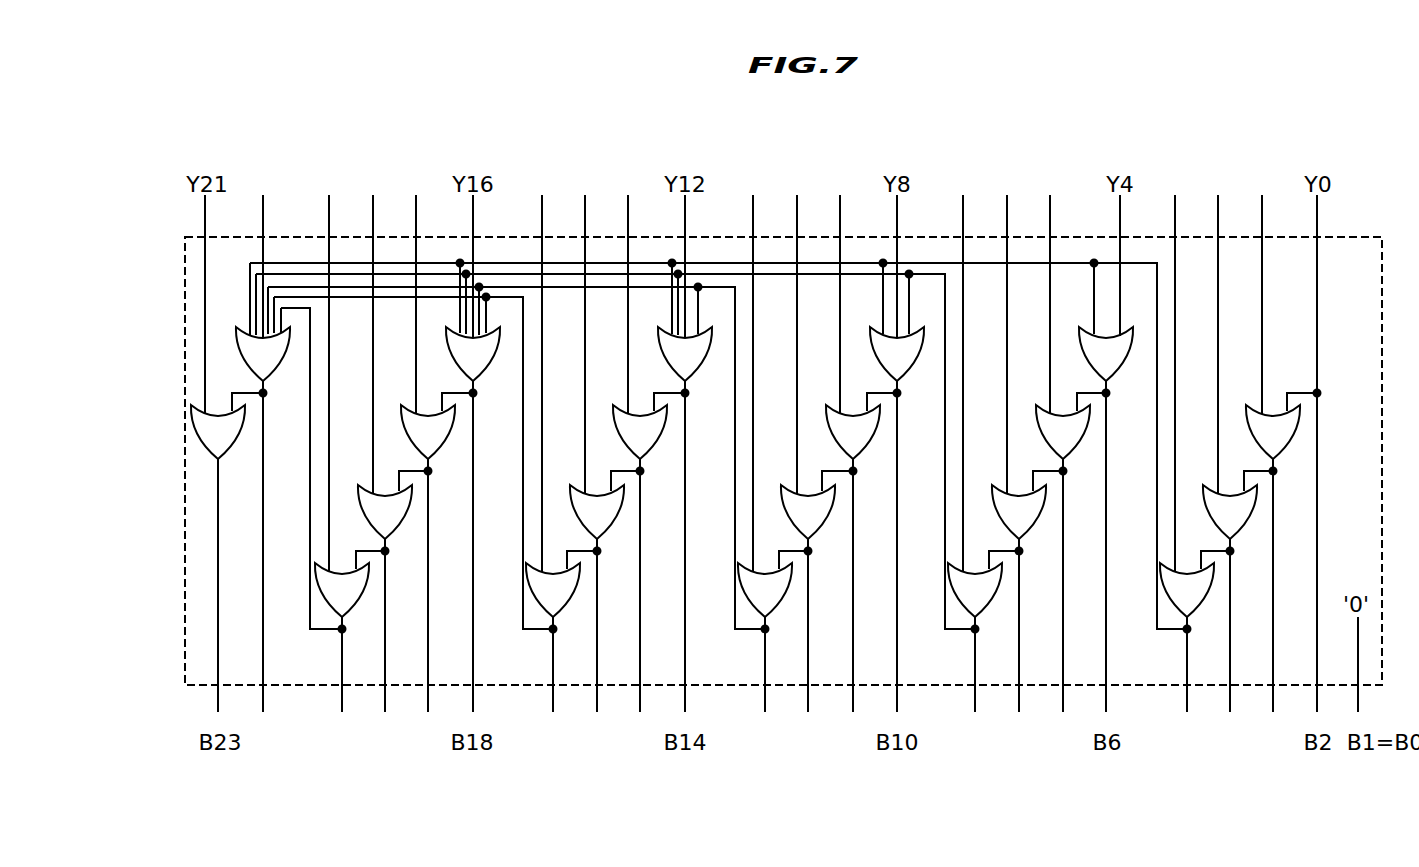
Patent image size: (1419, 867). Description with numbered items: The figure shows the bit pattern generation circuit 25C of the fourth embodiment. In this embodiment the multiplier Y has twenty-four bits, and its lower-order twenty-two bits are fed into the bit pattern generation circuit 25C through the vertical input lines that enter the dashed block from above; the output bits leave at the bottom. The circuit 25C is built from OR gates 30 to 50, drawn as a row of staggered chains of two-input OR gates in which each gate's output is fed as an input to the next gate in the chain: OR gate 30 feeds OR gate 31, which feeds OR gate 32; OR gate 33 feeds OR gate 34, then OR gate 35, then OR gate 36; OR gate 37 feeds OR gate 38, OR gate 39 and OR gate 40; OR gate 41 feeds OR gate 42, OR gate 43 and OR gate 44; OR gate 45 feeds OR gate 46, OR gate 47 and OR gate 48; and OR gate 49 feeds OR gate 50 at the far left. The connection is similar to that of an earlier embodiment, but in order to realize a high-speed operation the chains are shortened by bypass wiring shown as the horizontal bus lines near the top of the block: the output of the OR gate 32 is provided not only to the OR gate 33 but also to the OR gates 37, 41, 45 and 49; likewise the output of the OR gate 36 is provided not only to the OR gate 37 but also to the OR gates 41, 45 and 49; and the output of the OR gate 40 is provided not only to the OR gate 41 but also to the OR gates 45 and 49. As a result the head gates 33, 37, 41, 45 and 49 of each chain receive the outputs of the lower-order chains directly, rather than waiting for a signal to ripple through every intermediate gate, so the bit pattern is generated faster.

The bit pattern generation circuit 25C is at (1355, 237).
The OR gate 30 is at (1287, 441).
The OR gate 31 is at (1244, 521).
The OR gate 32 is at (1201, 599).
The OR gate 33 is at (1120, 363).
The OR gate 34 is at (1077, 441).
The OR gate 35 is at (1033, 521).
The OR gate 36 is at (989, 599).
The OR gate 37 is at (911, 363).
The OR gate 38 is at (867, 441).
The OR gate 39 is at (822, 521).
The OR gate 40 is at (779, 599).
The OR gate 41 is at (699, 363).
The OR gate 42 is at (654, 441).
The OR gate 43 is at (611, 521).
The OR gate 44 is at (567, 599).
The OR gate 45 is at (487, 363).
The OR gate 46 is at (442, 441).
The OR gate 47 is at (399, 521).
The OR gate 48 is at (356, 599).
The OR gate 49 is at (242, 344).
The OR gate 50 is at (232, 441).